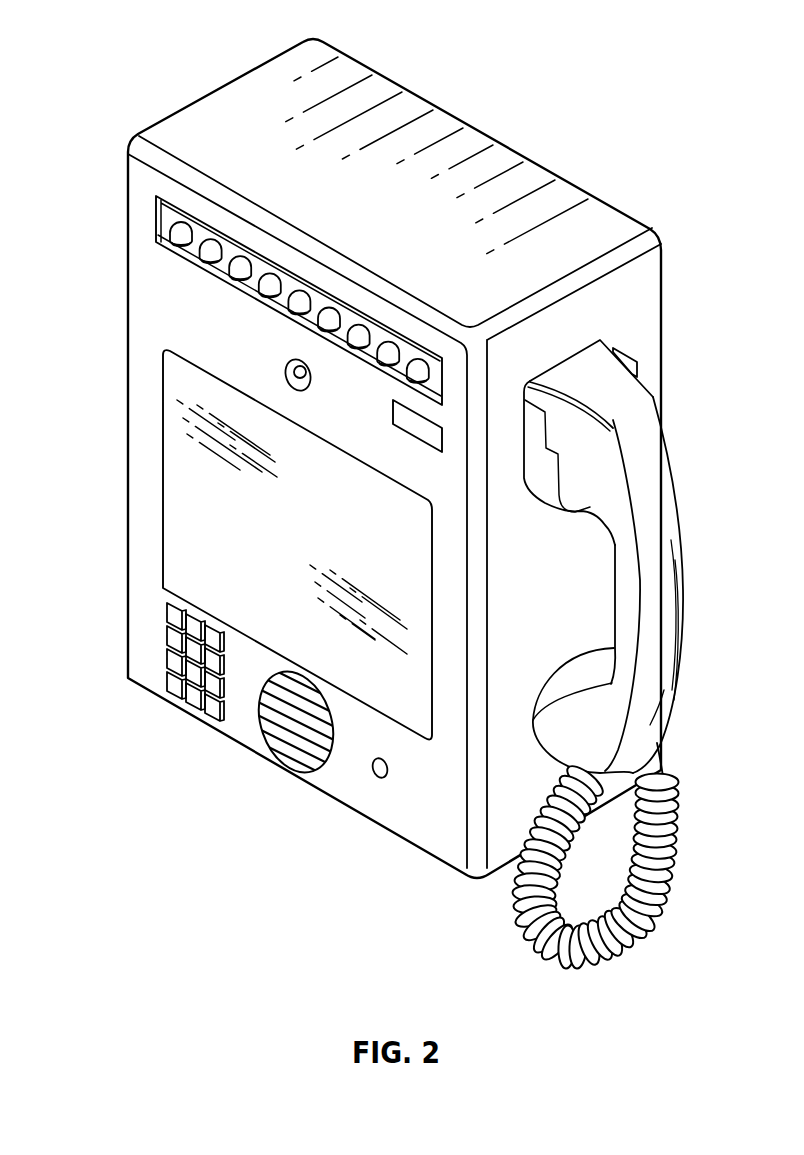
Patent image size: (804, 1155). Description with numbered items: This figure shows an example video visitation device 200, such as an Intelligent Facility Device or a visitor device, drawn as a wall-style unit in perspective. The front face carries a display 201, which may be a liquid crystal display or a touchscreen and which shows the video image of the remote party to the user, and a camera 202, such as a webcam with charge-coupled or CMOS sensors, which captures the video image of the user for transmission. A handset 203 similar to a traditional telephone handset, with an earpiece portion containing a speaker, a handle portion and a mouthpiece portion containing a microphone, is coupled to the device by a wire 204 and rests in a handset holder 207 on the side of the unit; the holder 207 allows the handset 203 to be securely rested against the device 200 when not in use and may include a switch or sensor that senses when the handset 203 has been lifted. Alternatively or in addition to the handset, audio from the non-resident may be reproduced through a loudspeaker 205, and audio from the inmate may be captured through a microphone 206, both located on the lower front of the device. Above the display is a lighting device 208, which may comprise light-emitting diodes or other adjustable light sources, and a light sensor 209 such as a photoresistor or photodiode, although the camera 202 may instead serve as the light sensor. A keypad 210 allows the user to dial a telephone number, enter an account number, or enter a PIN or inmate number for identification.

The video visitation device 200 is at (613, 42).
The display 201 is at (190, 532).
The camera 202 is at (293, 366).
The handset 203 is at (683, 498).
The wire 204 is at (677, 856).
The loudspeaker 205 is at (284, 751).
The microphone 206 is at (370, 765).
The handset holder 207 is at (549, 506).
The lighting device 208 is at (155, 212).
The light sensor 209 is at (413, 437).
The keypad 210 is at (178, 688).